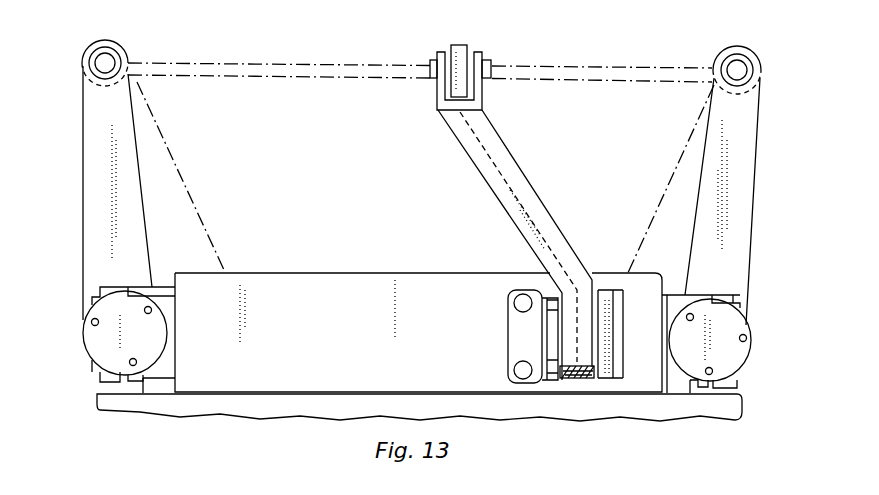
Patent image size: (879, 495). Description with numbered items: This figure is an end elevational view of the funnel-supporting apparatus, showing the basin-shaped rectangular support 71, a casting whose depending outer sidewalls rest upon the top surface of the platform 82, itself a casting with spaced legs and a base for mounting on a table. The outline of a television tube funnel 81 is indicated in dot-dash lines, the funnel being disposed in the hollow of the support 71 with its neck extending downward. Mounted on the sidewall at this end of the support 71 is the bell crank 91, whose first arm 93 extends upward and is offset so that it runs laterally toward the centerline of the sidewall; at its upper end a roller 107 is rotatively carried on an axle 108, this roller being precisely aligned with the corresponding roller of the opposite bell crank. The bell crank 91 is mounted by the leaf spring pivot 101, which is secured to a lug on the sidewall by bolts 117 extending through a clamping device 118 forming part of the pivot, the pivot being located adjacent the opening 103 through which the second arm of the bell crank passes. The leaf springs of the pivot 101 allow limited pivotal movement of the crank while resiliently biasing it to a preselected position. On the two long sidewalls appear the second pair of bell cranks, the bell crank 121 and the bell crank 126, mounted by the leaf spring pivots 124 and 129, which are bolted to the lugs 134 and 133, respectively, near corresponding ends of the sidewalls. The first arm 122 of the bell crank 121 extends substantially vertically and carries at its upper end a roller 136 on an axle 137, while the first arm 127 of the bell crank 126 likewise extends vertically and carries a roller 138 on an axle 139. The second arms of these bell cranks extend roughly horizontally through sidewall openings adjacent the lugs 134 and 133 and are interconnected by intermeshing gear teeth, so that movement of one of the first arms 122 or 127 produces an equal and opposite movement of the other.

The support 71 is at (313, 343).
The television tube funnel 81 is at (585, 66).
The platform 82 is at (625, 422).
The bell crank 91 is at (512, 215).
The first arm 93 is at (503, 154).
The leaf spring pivot 101 is at (573, 380).
The opening 103 is at (555, 380).
The roller 107 is at (455, 46).
The axle 108 is at (489, 70).
The bolt 117 is at (508, 303).
The clamping device 118 is at (518, 338).
The bell crank 121 is at (753, 197).
The first arm 122 is at (743, 147).
The leaf spring pivot 124 is at (752, 345).
The bell crank 126 is at (85, 230).
The first arm 127 is at (97, 165).
The leaf spring pivot 129 is at (84, 335).
The lug 133 is at (153, 385).
The lug 134 is at (686, 388).
The roller 136 is at (762, 72).
The axle 137 is at (732, 67).
The roller 138 is at (122, 50).
The axle 139 is at (102, 63).